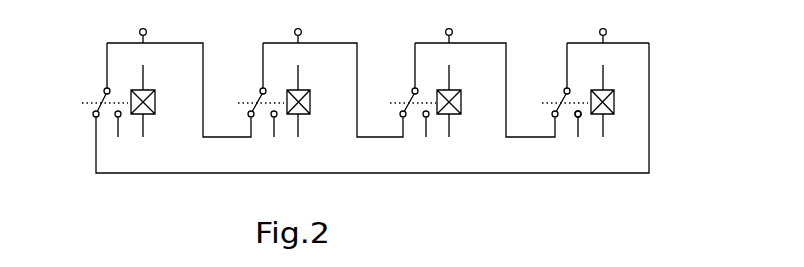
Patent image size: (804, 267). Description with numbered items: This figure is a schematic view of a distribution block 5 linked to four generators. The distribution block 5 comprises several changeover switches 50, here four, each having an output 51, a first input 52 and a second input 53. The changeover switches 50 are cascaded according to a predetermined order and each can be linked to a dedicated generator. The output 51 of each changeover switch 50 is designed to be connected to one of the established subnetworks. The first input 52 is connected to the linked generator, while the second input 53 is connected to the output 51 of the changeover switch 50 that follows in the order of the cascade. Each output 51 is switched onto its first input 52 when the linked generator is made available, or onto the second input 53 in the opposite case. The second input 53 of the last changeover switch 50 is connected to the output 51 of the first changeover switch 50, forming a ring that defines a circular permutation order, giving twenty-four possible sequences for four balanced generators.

The switching circuit 5 is at (115, 188).
The changeover switch 50 is at (91, 93).
The output 51 is at (569, 89).
The first input 52 is at (580, 118).
The second input 53 is at (556, 118).